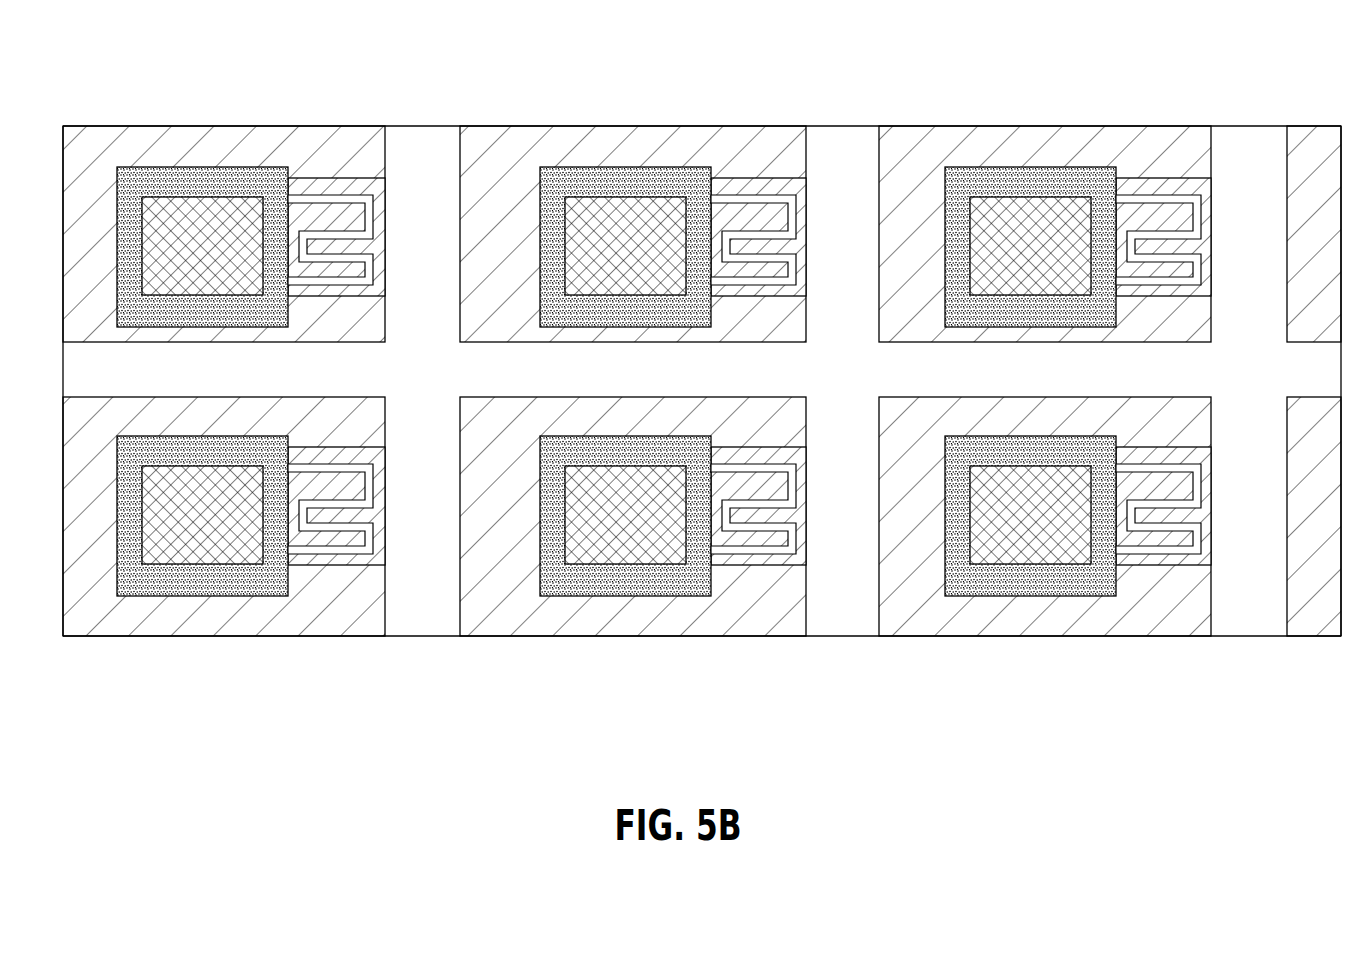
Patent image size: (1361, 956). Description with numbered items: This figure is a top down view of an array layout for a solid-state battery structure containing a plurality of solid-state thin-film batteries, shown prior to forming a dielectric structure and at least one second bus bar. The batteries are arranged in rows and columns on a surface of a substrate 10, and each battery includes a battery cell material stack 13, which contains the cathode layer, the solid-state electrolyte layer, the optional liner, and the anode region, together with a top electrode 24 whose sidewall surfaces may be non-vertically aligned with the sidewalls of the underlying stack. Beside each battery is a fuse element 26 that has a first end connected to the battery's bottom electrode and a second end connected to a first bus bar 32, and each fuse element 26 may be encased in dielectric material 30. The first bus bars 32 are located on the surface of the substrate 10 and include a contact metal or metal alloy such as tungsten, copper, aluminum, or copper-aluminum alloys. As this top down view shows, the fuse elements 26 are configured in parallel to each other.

The substrate 10 is at (77, 170).
The battery cell material stack 13 is at (616, 384).
The top electrode 24 is at (616, 380).
The fuse element 26 is at (738, 383).
The dielectric material 30 is at (718, 384).
The first bus bar 32 is at (836, 373).